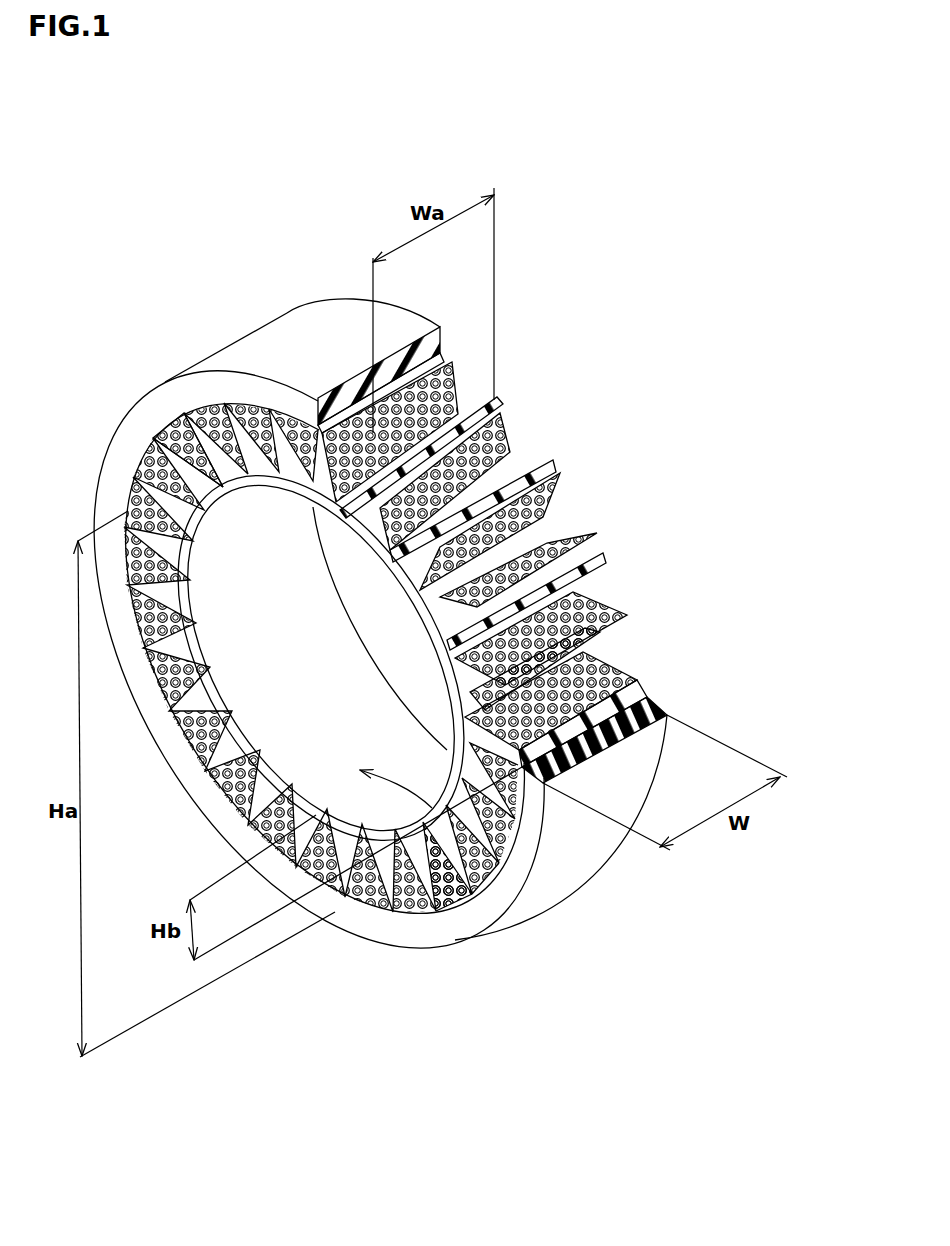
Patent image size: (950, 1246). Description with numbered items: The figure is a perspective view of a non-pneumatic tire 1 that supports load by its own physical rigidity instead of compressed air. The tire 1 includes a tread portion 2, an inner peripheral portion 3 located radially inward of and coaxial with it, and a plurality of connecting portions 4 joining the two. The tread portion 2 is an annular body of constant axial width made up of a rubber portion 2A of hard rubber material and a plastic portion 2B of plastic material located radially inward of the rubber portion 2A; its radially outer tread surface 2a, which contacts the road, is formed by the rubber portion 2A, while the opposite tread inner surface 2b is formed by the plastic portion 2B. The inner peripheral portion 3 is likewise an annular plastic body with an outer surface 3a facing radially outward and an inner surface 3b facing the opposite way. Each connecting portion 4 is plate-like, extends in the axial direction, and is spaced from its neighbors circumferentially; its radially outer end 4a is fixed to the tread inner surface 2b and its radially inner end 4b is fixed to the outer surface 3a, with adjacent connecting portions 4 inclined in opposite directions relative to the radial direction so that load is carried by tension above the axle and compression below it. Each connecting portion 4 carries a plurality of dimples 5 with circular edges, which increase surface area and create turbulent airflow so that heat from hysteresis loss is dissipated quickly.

The non-pneumatic tire 1 is at (158, 280).
The tread portion 2 is at (178, 395).
The tread surface 2a is at (454, 949).
The tread inner surface 2b is at (413, 900).
The rubber portion 2A is at (666, 712).
The plastic portion 2B is at (645, 697).
The inner peripheral portion 3 is at (188, 532).
The outer surface 3a is at (460, 887).
The inner surface 3b is at (470, 898).
The connecting portion 4 is at (227, 503).
The radially outer end 4a is at (490, 418).
The radially inner end 4b is at (512, 478).
The dimple 5 is at (505, 442).